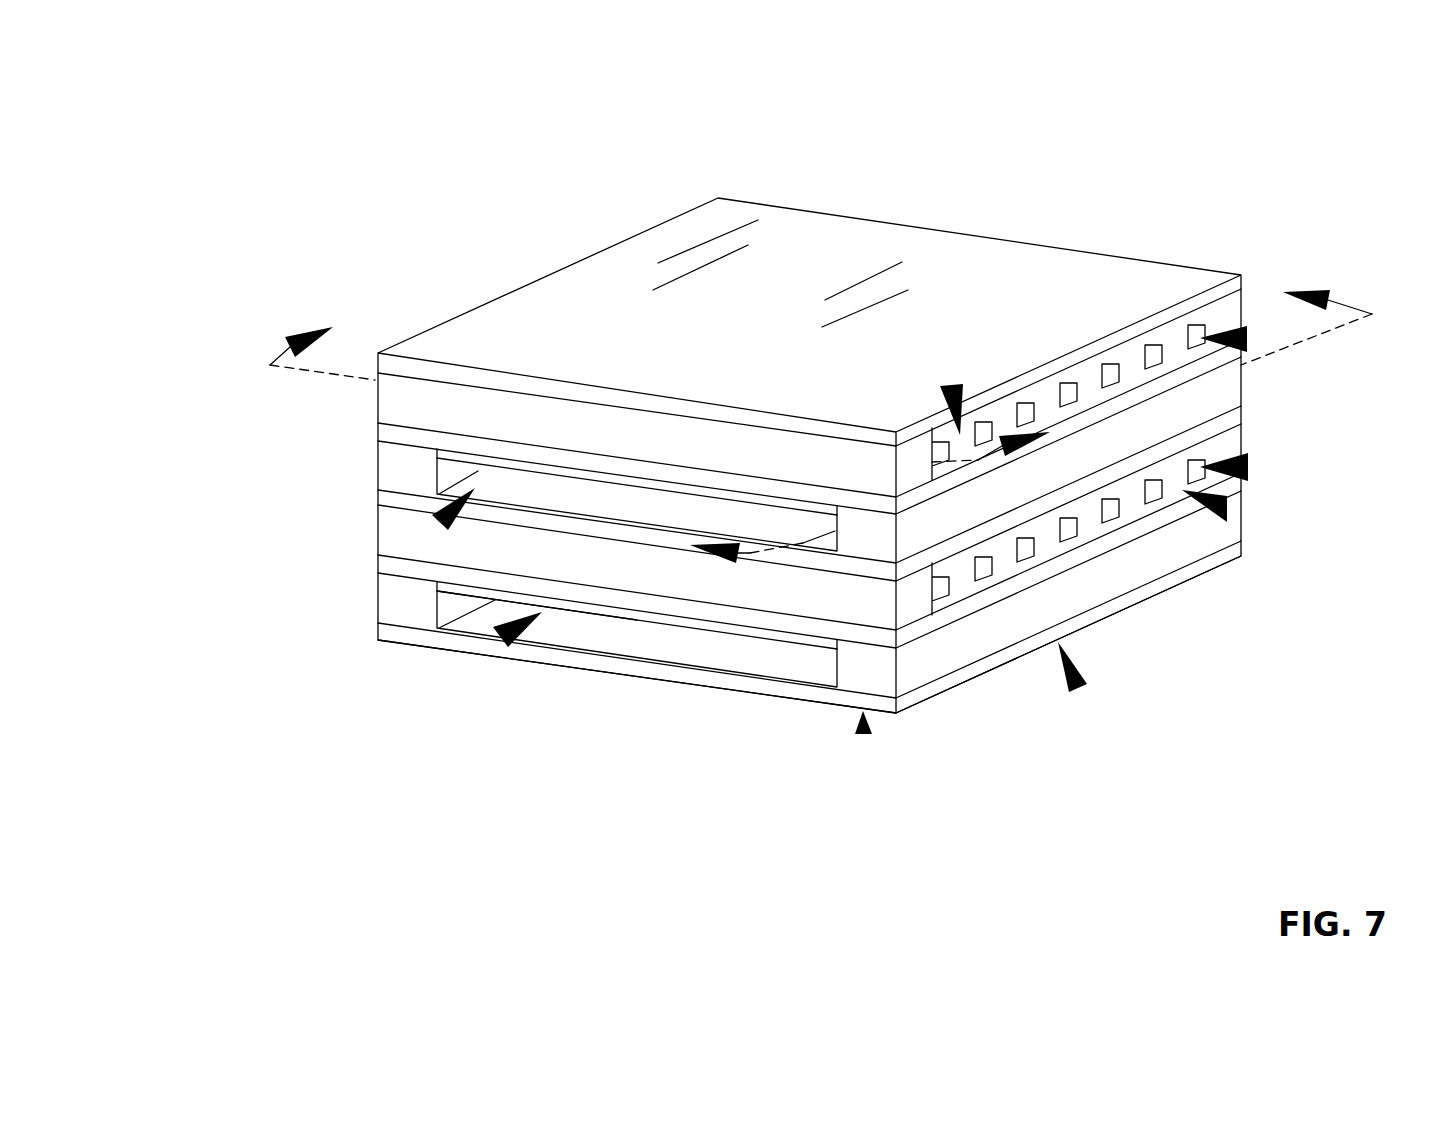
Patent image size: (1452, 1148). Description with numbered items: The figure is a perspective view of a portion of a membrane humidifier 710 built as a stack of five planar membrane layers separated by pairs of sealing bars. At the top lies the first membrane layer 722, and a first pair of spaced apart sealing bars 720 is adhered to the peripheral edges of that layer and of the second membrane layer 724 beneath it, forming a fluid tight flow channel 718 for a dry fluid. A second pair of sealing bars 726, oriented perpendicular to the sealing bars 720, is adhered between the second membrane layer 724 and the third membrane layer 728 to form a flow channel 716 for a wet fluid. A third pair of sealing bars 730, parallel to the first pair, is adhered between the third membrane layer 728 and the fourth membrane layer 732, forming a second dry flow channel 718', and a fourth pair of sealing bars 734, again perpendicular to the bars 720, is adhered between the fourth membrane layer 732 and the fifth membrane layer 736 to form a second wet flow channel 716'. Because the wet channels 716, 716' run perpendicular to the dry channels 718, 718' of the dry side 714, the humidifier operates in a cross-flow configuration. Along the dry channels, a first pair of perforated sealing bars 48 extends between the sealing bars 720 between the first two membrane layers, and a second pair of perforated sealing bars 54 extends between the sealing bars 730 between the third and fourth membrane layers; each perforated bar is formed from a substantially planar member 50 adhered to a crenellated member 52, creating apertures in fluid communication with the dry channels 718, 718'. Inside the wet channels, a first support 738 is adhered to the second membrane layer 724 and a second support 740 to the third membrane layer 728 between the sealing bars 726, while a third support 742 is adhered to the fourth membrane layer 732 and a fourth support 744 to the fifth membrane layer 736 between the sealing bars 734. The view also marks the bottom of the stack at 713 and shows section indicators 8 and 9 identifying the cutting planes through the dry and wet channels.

The membrane humidifier 710 is at (402, 196).
The first membrane layer 722 is at (809, 367).
The first pair of sealing bars 720 is at (743, 457).
The second membrane layer 724 is at (385, 432).
The second pair of sealing bars 726 is at (393, 471).
The third membrane layer 728 is at (1225, 423).
The fourth membrane layer 732 is at (1250, 497).
The third pair of sealing bars 730 is at (800, 590).
The flow channel 716 is at (492, 516).
The flow channel 716' is at (637, 677).
The first support 738 is at (590, 484).
The second support 740 is at (497, 495).
The third support 742 is at (588, 615).
The fourth support 744 is at (700, 655).
The first pair of perforated sealing bars 48 is at (948, 386).
The planar member 50 is at (1063, 378).
The crenellated member 52 is at (1182, 348).
The flow channel 718 is at (1306, 356).
The flow channel 718' is at (1296, 475).
The second pair of perforated sealing bars 54 is at (1235, 515).
The fourth pair of sealing bars 734 is at (410, 610).
The fifth membrane layer 736 is at (1143, 598).
The bottom surface 713 is at (864, 734).
The dry side 714 is at (1078, 688).
The section line 8- 8 is at (680, 378).
The section line 9- 9 is at (1014, 417).